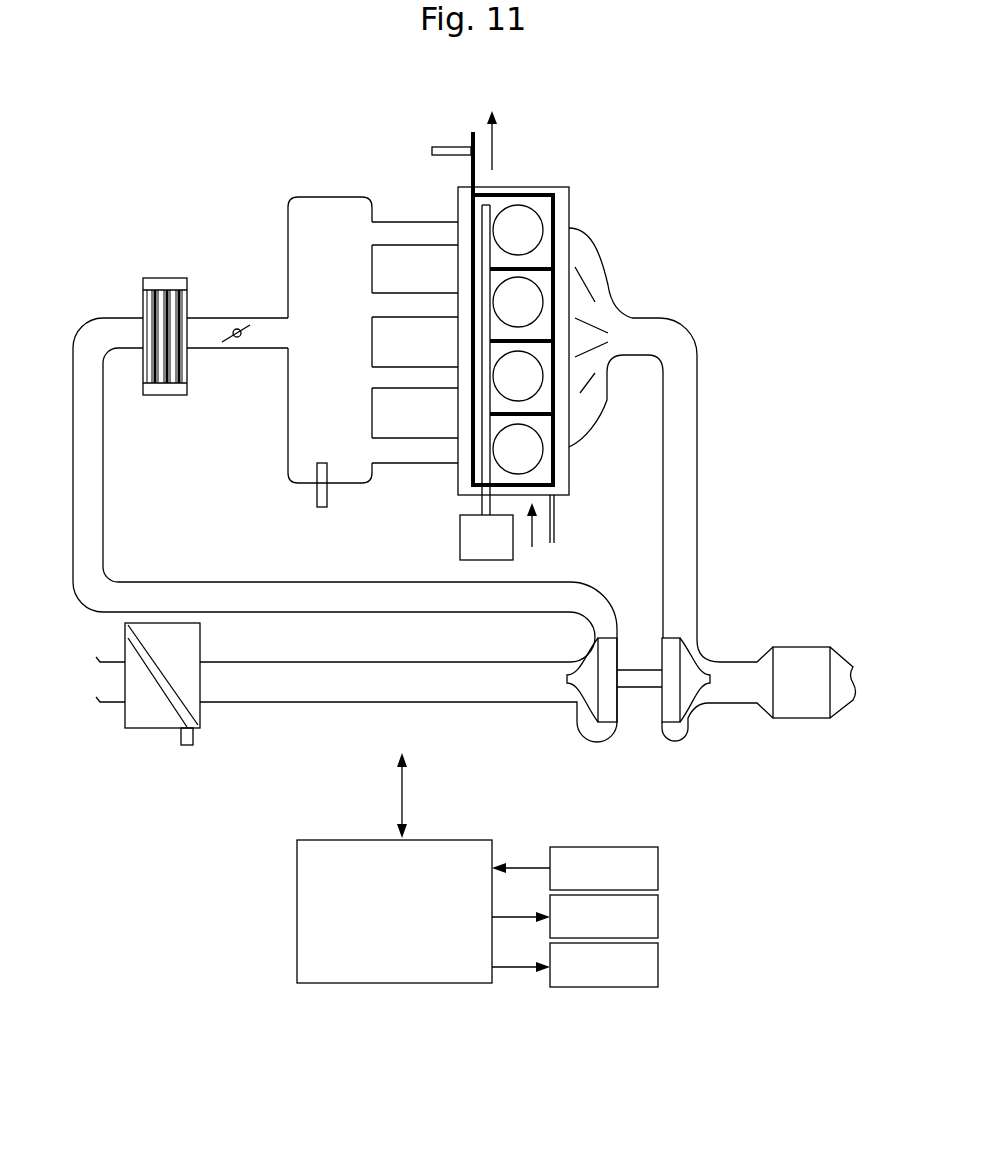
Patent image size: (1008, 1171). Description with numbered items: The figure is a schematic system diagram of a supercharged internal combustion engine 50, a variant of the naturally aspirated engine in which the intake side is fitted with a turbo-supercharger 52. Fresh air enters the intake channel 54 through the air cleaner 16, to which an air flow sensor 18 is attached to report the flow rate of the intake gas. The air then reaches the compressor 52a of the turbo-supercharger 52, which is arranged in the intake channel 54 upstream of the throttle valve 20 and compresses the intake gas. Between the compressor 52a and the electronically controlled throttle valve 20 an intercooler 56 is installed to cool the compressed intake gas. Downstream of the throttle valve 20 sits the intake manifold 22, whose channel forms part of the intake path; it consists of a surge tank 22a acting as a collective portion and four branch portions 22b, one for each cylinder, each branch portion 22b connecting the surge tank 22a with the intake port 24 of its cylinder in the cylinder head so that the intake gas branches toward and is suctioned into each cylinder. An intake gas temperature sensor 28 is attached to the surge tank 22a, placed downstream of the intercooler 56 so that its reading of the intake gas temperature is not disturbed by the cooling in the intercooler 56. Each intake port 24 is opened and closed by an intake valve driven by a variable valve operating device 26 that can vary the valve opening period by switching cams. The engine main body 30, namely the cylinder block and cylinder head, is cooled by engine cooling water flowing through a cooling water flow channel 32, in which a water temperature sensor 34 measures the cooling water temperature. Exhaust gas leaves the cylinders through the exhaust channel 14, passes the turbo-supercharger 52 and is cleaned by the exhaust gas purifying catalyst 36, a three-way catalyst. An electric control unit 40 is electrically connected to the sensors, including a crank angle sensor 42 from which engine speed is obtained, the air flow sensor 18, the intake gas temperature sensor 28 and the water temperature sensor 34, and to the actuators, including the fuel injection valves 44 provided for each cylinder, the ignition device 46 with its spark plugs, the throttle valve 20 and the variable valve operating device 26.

The exhaust channel 14 is at (650, 289).
The air cleaner 16 is at (200, 640).
The air flow sensor 18 is at (187, 747).
The throttle valve 20 is at (235, 347).
The intake manifold 22 is at (320, 358).
The surge tank 22a is at (293, 463).
The branch portions 22b is at (412, 305).
The intake port 24 is at (473, 222).
The variable valve operating device 26 is at (460, 557).
The intake gas temperature sensor 28 is at (319, 508).
The engine main body 30 is at (569, 485).
The cooling water flow channel 32 is at (554, 540).
The water temperature sensor 34 is at (433, 148).
The exhaust gas purifying catalyst 36 is at (797, 657).
The electric control unit (ECU) 40 is at (297, 904).
The crank angle sensor 42 is at (660, 869).
The fuel injection valves 44 is at (660, 917).
The ignition device 46 is at (660, 967).
The internal combustion engine 50 is at (690, 172).
The turbo-supercharger 52 is at (612, 721).
The compressor 52a is at (595, 688).
The intake channel 54 is at (145, 558).
The intercooler 56 is at (163, 277).